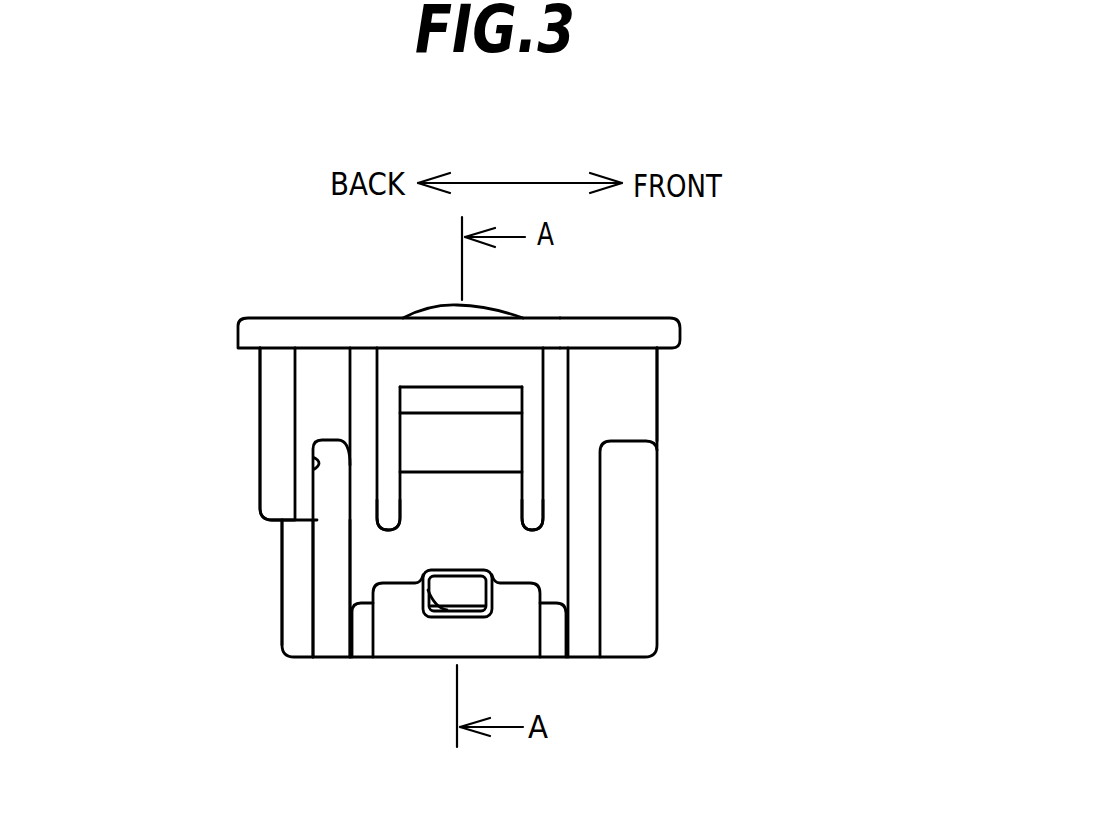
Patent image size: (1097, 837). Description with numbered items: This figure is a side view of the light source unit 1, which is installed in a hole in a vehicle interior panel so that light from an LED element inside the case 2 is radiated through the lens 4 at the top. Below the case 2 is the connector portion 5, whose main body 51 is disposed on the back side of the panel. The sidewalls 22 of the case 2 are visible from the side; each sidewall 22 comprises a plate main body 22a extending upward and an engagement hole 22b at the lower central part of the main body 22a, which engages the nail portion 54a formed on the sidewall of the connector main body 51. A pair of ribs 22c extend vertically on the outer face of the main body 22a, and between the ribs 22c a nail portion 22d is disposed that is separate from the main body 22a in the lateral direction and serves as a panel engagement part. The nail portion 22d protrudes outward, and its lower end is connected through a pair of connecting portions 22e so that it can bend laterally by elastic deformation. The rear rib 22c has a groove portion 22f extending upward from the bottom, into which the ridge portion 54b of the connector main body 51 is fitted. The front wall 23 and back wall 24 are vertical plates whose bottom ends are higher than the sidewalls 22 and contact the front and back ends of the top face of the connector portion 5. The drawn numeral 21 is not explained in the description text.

The light source unit 1 is at (770, 248).
The case 2 is at (257, 339).
The lens 4 is at (476, 308).
The connector portion 5 is at (635, 620).
The flange 21 is at (615, 337).
The sidewall 22 is at (530, 502).
The plate main body 22a is at (523, 370).
The engagement hole 22b is at (437, 593).
The rib 22c is at (357, 370).
The nail portion 22d is at (427, 397).
The connecting portion 22e is at (383, 542).
The groove portion 22f is at (317, 470).
The front wall 23 is at (638, 418).
The back wall 24 is at (272, 413).
The main body 51 is at (298, 623).
The nail portion 54a is at (470, 592).
The ridge portion 54b is at (330, 642).